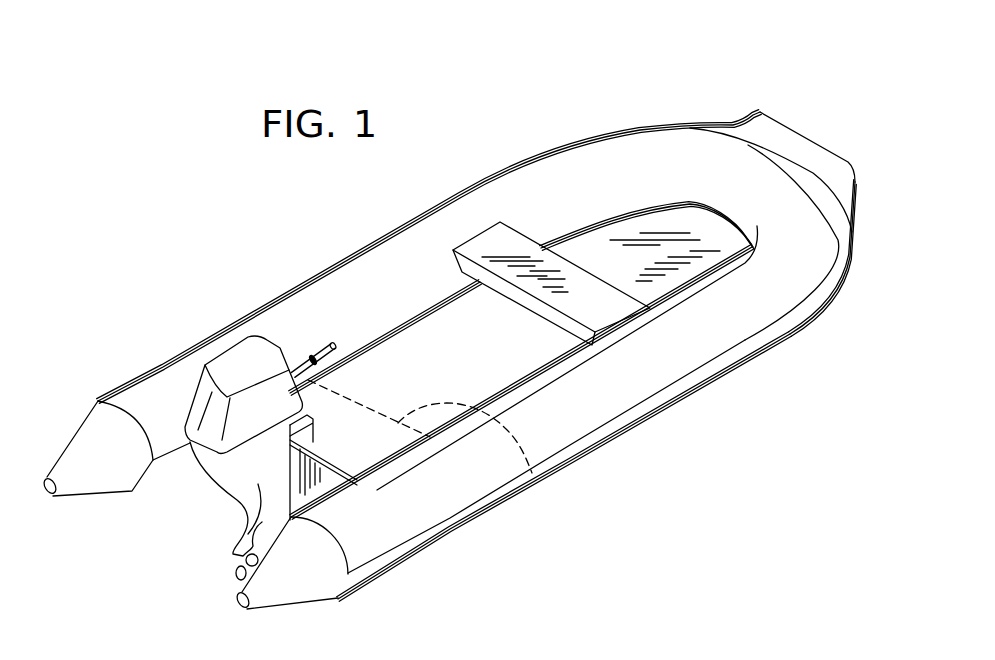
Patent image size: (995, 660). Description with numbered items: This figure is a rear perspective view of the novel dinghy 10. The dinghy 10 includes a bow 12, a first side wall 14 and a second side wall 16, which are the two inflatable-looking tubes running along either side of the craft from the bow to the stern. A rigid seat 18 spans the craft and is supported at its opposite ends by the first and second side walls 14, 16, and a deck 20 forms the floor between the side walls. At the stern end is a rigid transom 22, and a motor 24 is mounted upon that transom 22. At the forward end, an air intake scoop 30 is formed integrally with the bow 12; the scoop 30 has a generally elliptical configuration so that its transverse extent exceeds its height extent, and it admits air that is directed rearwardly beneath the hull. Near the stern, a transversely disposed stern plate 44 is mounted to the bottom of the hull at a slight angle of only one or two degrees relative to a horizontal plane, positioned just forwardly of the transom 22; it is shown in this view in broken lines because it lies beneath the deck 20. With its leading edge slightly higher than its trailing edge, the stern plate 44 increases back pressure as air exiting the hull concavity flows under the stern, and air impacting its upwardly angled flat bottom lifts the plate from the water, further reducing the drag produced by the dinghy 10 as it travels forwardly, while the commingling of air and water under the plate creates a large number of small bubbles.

The dinghy 10 is at (733, 62).
The bow 12 is at (768, 191).
The first side wall 14 is at (395, 294).
The second side wall 16 is at (594, 417).
The rigid seat 18 is at (597, 306).
The deck 20 is at (496, 357).
The rigid transom 22 is at (330, 476).
The motor 24 is at (245, 362).
The air intake scoop 30 is at (814, 152).
The stern plate 44 is at (535, 475).